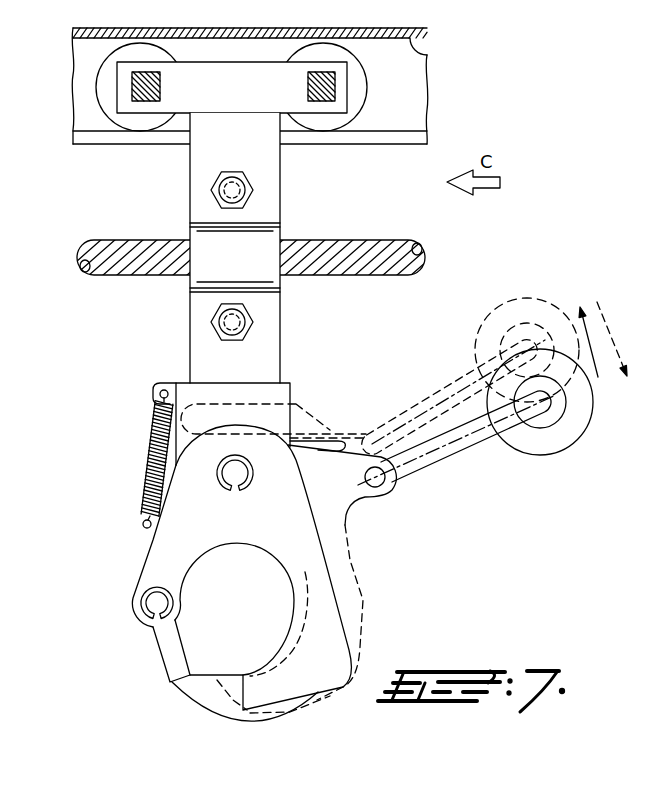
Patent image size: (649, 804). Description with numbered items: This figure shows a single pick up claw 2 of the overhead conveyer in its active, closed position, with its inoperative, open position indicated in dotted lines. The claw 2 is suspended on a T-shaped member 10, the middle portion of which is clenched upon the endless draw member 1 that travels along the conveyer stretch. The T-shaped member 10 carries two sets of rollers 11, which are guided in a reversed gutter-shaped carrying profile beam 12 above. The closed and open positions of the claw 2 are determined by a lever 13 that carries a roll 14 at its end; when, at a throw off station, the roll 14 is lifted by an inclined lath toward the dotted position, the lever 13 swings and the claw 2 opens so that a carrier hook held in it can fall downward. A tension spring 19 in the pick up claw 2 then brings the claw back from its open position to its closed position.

The endless draw member 1 is at (373, 250).
The pick up claw 2 is at (372, 577).
The T-shaped member 10 is at (268, 187).
The rollers 11 is at (358, 97).
The carrying profile beam 12 is at (427, 52).
The lever 13 is at (446, 400).
The roll 14 is at (532, 303).
The tension spring 19 is at (152, 452).